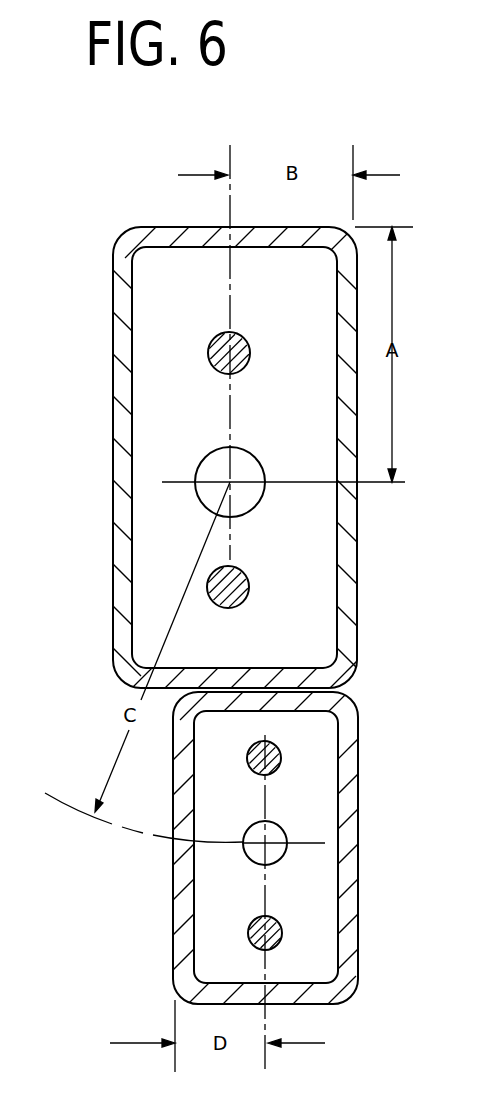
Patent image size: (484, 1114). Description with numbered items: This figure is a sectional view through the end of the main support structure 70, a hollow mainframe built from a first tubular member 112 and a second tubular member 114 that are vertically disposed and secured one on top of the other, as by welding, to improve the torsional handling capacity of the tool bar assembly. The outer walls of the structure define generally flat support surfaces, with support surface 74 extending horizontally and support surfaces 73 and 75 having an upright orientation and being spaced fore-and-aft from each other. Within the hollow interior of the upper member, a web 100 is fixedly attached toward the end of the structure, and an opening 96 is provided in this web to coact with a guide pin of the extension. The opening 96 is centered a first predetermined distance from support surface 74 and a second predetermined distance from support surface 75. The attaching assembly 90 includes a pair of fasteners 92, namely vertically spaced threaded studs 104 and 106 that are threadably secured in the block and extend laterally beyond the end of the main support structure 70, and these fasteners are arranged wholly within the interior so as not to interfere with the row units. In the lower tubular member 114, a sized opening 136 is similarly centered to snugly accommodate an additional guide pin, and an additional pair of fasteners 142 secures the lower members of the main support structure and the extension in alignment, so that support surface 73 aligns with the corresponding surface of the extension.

The main support structure 70 is at (106, 243).
The support surface 73 is at (173, 918).
The support surface 74 is at (160, 227).
The support surface 75 is at (360, 765).
The attaching assembly 90 is at (196, 432).
The fasteners 92 is at (199, 342).
The opening 96 is at (252, 476).
The web 100 is at (152, 311).
The threaded stud 104 is at (238, 342).
The threaded stud 106 is at (244, 572).
The first tubular member 112 is at (345, 573).
The second tubular member 114 is at (360, 894).
The sized opening 136 is at (283, 842).
The fasteners 142 is at (284, 763).